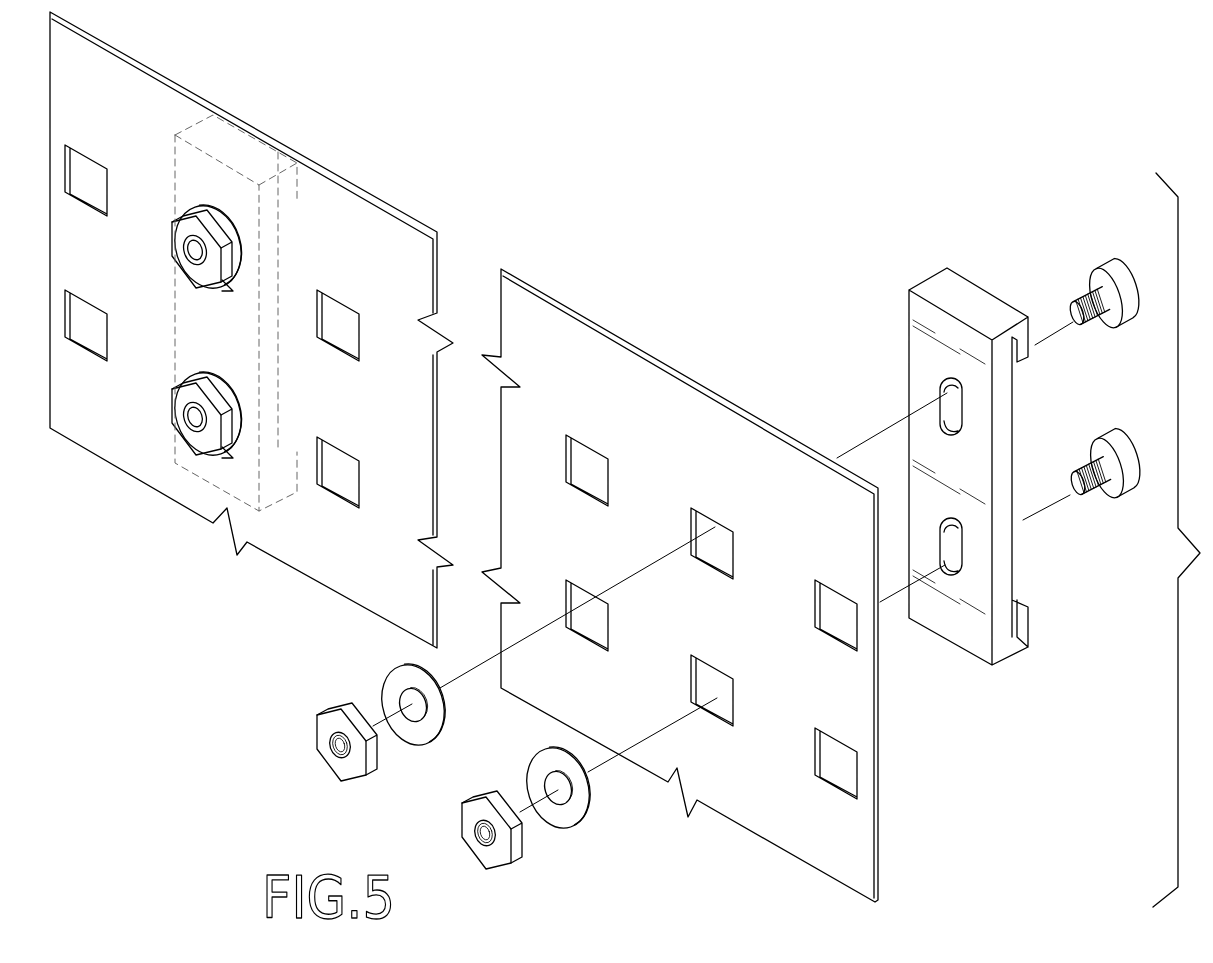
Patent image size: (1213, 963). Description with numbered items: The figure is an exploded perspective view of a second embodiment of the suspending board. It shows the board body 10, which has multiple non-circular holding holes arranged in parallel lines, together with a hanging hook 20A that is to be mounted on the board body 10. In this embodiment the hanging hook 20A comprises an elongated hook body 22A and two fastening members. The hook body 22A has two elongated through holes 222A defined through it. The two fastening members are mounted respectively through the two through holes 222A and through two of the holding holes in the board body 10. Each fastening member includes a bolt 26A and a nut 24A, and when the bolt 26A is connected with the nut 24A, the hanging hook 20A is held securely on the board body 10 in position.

The board body 10 is at (600, 300).
The hanging hook 20A is at (916, 423).
The hook body 22A is at (900, 320).
The elongated through hole 222A is at (940, 396).
The nut 24A is at (1117, 275).
The bolt 26A is at (327, 725).